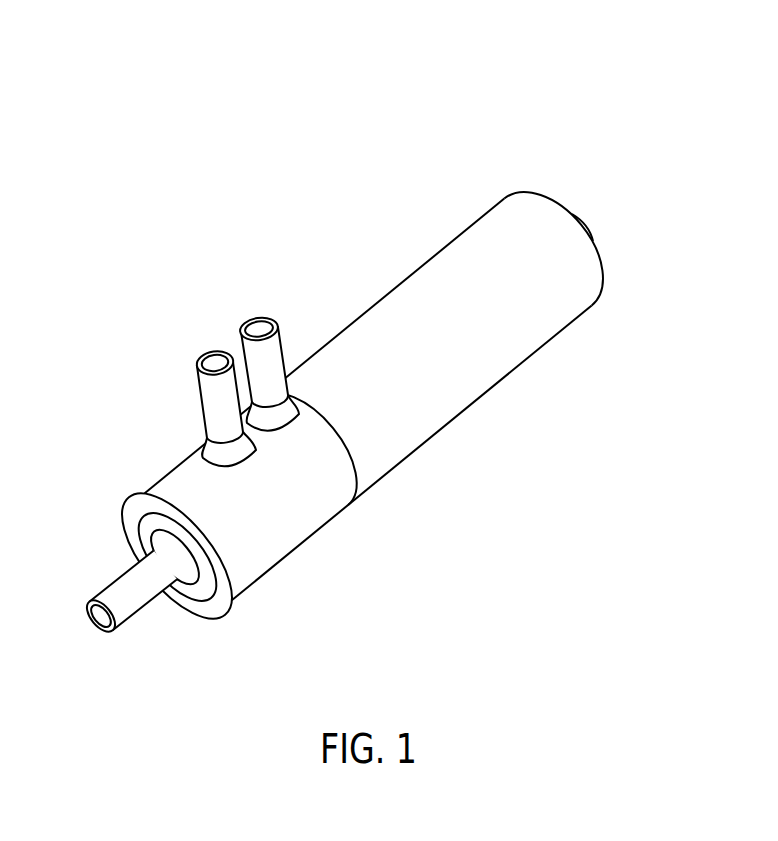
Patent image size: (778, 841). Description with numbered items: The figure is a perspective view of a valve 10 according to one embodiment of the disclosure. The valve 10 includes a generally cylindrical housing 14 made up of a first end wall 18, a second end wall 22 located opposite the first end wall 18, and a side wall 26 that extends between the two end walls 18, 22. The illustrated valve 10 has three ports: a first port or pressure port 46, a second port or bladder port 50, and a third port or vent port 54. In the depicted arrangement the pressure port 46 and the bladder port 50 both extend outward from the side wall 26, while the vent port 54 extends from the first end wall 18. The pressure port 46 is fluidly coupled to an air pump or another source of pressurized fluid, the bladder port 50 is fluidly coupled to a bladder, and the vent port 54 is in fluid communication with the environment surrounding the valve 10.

The valve 10 is at (524, 114).
The housing 14 is at (392, 394).
The first end wall 18 is at (132, 522).
The second end wall 22 is at (603, 258).
The side wall 26 is at (442, 273).
The pressure port 46 is at (270, 318).
The bladder port 50 is at (197, 366).
The vent port 54 is at (112, 593).